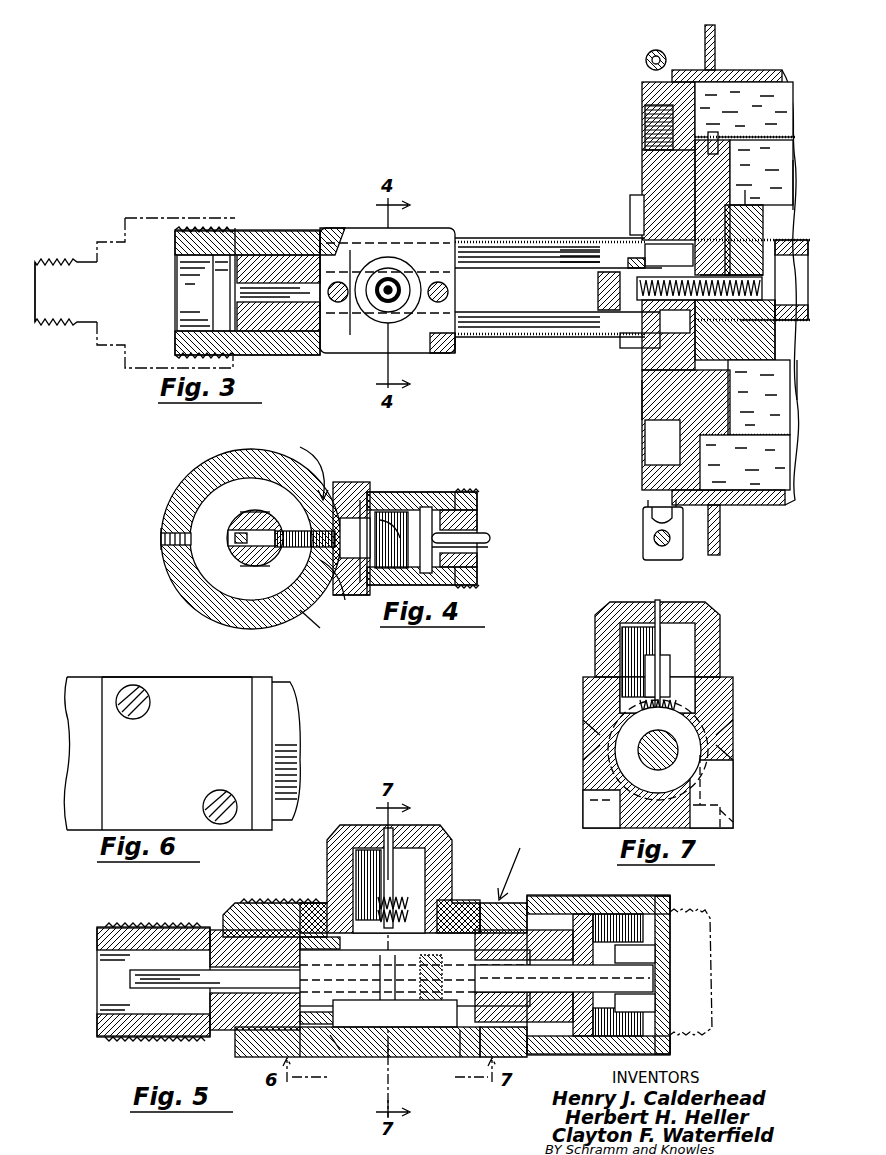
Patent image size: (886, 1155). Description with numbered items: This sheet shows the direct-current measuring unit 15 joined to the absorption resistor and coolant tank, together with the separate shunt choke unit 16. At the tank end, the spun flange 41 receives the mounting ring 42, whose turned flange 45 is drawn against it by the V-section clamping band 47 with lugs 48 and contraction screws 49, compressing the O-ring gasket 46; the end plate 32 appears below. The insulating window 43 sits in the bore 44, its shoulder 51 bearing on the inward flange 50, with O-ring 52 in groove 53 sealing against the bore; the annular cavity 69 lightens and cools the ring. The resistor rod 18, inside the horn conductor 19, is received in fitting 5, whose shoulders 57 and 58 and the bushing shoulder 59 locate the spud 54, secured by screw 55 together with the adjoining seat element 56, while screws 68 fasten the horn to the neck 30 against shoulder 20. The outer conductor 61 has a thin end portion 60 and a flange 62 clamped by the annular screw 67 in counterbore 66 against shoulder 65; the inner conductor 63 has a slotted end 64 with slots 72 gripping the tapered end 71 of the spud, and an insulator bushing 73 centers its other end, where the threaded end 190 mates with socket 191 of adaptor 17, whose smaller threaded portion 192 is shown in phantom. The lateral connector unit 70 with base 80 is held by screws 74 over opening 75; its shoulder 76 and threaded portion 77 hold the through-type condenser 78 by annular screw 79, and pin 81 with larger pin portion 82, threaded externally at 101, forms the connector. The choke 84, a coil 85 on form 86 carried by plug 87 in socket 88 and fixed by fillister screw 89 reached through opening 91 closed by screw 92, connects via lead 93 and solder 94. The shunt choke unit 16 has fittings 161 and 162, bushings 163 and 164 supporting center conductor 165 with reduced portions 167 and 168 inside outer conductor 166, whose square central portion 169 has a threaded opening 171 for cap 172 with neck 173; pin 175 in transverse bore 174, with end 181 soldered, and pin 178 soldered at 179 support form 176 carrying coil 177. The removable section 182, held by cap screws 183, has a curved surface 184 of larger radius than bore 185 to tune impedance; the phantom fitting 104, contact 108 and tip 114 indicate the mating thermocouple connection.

In FIG. 3, the fitting 5 is at (775, 330).
In FIG. 3, the direct-current measuring unit 15 is at (506, 228).
In FIG. 6, the shunt choke unit 16 is at (76, 664).
In FIG. 5, the shunt choke unit 16 is at (516, 866).
In FIG. 3, the transition element or adaptor 17 is at (125, 218).
In FIG. 3, the resistor rod 18 is at (786, 228).
In FIG. 3, the resistor housing 19 is at (758, 145).
In FIG. 3, the shoulder 20 is at (728, 486).
In FIG. 3, the neck portion 30 is at (745, 462).
In FIG. 3, the end plate 32 is at (710, 555).
In FIG. 3, the flange 41 is at (705, 62).
In FIG. 3, the mounting ring or plug 42 is at (640, 140).
In FIG. 3, the insulating window 43 is at (753, 186).
In FIG. 3, the bore 44 is at (732, 362).
In FIG. 3, the flange 45 is at (648, 505).
In FIG. 3, the resilient ring gasket 46 is at (642, 88).
In FIG. 3, the clamping ring or band 47 is at (646, 52).
In FIG. 3, the lug 48 is at (643, 520).
In FIG. 3, the contraction screw 49 is at (654, 540).
In FIG. 3, the annular inwardly extending flange 50 is at (734, 180).
In FIG. 3, the shoulder 51 is at (686, 430).
In FIG. 3, the O-ring 52 is at (744, 240).
In FIG. 3, the annular groove 53 is at (735, 330).
In FIG. 3, the spud 54 is at (753, 330).
In FIG. 3, the screw 55 is at (762, 290).
In FIG. 3, the valve seat 56 is at (648, 265).
In FIG. 3, the shoulder 57 is at (801, 379).
In FIG. 3, the shoulder 58 is at (791, 280).
In FIG. 3, the annular shoulder 59 is at (731, 252).
In FIG. 3, the end portion 60 is at (548, 238).
In FIG. 3, the outer tubular conductor 61 is at (283, 232).
In FIG. 4, the outer tubular conductor 61 is at (200, 472).
In FIG. 3, the flange 62 is at (642, 155).
In FIG. 3, the inner conductor 63 is at (540, 296).
In FIG. 4, the inner conductor 63 is at (245, 558).
In FIG. 3, the hollow slotted end portion 64 is at (608, 312).
In FIG. 3, the radial shoulder 65 is at (705, 207).
In FIG. 3, the internally threaded counterbore 66 is at (642, 385).
In FIG. 3, the annular clamping screw 67 is at (630, 210).
In FIG. 3, the screws 68 is at (714, 130).
In FIG. 3, the annular cavity 69 is at (648, 446).
In FIG. 3, the lateral direct-current connector unit 70 is at (418, 232).
In FIG. 4, the lateral direct-current connector unit 70 is at (425, 492).
In FIG. 3, the outer end 71 is at (668, 335).
In FIG. 3, the slots 72 is at (630, 258).
In FIG. 3, the insulator bushing 73 is at (255, 258).
In FIG. 3, the screws 74 is at (338, 304).
In FIG. 4, the lateral opening 75 is at (325, 570).
In FIG. 4, the shoulder 76 is at (470, 548).
In FIG. 4, the internally threaded portion 77 is at (392, 515).
In FIG. 3, the through-type condenser 78 is at (378, 318).
In FIG. 4, the through-type condenser 78 is at (445, 520).
In FIG. 4, the annular screw 79 is at (375, 590).
In FIG. 3, the flange or base 80 is at (355, 335).
In FIG. 4, the flange or base 80 is at (345, 482).
In FIG. 4, the connection pin 81 is at (388, 540).
In FIG. 3, the pin portion 82 is at (380, 280).
In FIG. 4, the pin portion 82 is at (492, 536).
In FIG. 4, the radio frequency choke 84 is at (307, 462).
In FIG. 4, the coil of wire 85 is at (300, 528).
In FIG. 4, the insulating form 86 is at (345, 597).
In FIG. 4, the plug 87 is at (245, 512).
In FIG. 4, the socket or bore hole 88 is at (258, 568).
In FIG. 4, the fillister screw 89 is at (232, 555).
In FIG. 4, the opening 91 is at (162, 545).
In FIG. 4, the screw 92 is at (160, 530).
In FIG. 4, the lead 93 is at (366, 495).
In FIG. 4, the solder connection 94 is at (308, 628).
In FIG. 4, the external threads 101 is at (462, 495).
In FIG. 5, the coaxial line fitting 104 is at (712, 918).
In FIG. 5, the tubular contact 108 is at (645, 950).
In FIG. 5, the conical tip 114 is at (655, 978).
In FIG. 5, the coaxial line connection fitting 161 is at (600, 895).
In FIG. 5, the coaxial line connection fitting 162 is at (130, 925).
In FIG. 5, the insulating bushing 163 is at (538, 895).
In FIG. 5, the insulating bushing 164 is at (218, 930).
In FIG. 7, the center conductor 165 is at (701, 730).
In FIG. 5, the center conductor 165 is at (357, 1045).
In FIG. 5, the outer conductor 166 is at (260, 902).
In FIG. 5, the reduced diameter portion 167 is at (564, 978).
In FIG. 5, the reduced diameter portion 168 is at (250, 980).
In FIG. 6, the central portion 169 is at (290, 700).
In FIG. 7, the central portion 169 is at (584, 736).
In FIG. 5, the central portion 169 is at (476, 900).
In FIG. 5, the lateral opening 171 is at (330, 912).
In FIG. 7, the cap 172 is at (596, 652).
In FIG. 5, the cap 172 is at (452, 860).
In FIG. 7, the externally threaded neck portion 173 is at (584, 698).
In FIG. 5, the externally threaded neck portion 173 is at (326, 895).
In FIG. 5, the transverse bore 174 is at (395, 1013).
In FIG. 7, the conductive metal pin 175 is at (640, 760).
In FIG. 5, the conductive metal pin 175 is at (380, 975).
In FIG. 7, the insulating winding form 176 is at (672, 675).
In FIG. 5, the insulating winding form 176 is at (384, 850).
In FIG. 7, the choke coil 177 is at (680, 712).
In FIG. 5, the choke coil 177 is at (392, 908).
In FIG. 7, the conductive metal pin 178 is at (662, 640).
In FIG. 5, the conductive metal pin 178 is at (368, 885).
In FIG. 7, the globule of solder 179 is at (655, 598).
In FIG. 5, the globule of solder 179 is at (400, 830).
In FIG. 5, the end of pin 181 is at (430, 1010).
In FIG. 6, the removable section or plug 182 is at (203, 676).
In FIG. 7, the removable section or plug 182 is at (722, 790).
In FIG. 5, the removable section or plug 182 is at (332, 1058).
In FIG. 6, the cap screws 183 is at (128, 686).
In FIG. 7, the cap screws 183 is at (590, 798).
In FIG. 5, the cap screws 183 is at (458, 1060).
In FIG. 5, the internal conductive surface 184 is at (384, 1060).
In FIG. 5, the cylindrical bore 185 is at (315, 1060).
In FIG. 3, the externally threaded end 190 is at (213, 232).
In FIG. 3, the socket 191 is at (205, 215).
In FIG. 3, the externally threaded smaller diameter portion 192 is at (50, 258).